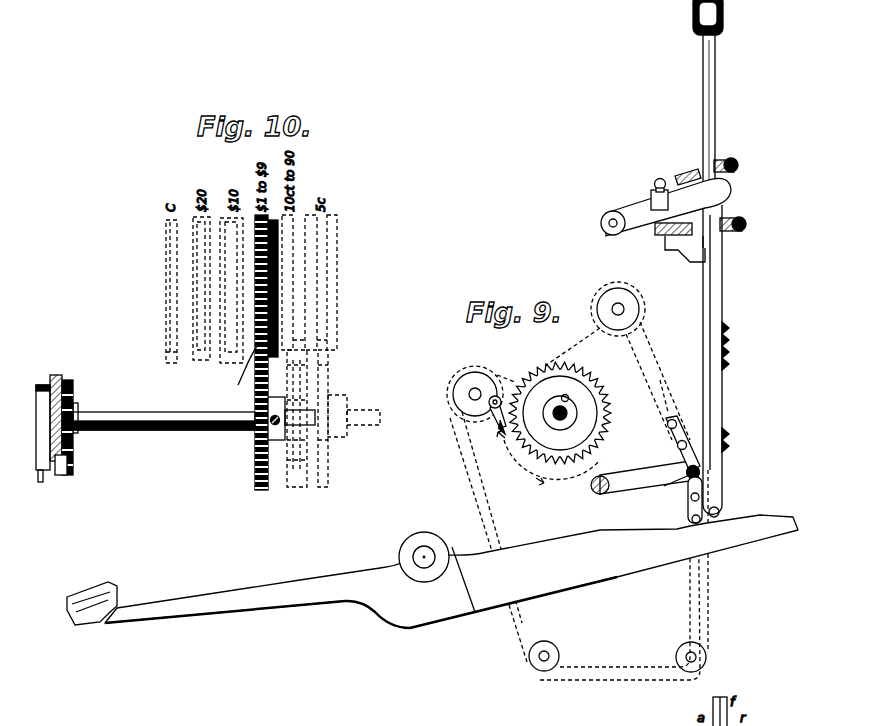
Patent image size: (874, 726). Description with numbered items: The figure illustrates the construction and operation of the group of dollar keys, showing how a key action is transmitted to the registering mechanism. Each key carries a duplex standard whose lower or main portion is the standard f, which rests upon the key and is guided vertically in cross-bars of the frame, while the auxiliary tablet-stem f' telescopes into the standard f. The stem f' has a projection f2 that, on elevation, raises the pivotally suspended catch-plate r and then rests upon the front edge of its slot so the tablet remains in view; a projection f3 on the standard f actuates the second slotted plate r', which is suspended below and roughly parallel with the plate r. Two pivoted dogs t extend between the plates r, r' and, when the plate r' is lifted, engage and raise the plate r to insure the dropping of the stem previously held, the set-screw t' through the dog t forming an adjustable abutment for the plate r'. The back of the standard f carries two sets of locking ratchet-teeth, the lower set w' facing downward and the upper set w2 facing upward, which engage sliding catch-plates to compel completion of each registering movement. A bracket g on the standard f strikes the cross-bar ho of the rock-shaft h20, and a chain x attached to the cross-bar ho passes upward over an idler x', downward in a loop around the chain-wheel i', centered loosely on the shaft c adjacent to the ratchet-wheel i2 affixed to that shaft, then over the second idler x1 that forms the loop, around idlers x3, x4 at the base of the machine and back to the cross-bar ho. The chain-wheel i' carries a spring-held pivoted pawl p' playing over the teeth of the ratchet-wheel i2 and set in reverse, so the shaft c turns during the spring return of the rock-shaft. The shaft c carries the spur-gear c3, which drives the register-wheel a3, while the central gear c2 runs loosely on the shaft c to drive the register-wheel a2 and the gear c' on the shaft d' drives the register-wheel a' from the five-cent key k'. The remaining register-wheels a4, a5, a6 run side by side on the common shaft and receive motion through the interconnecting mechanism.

In FIG. 10, the chain-wheel i' is at (49, 422).
In FIG. 10, the ratchet-wheel i2 is at (74, 422).
In FIG. 9, the ratchet-wheel i2 is at (598, 432).
In FIG. 10, the shaft c is at (194, 413).
In FIG. 9, the shaft c is at (560, 430).
In FIG. 10, the pawl p' is at (77, 468).
In FIG. 9, the pawl p' is at (468, 436).
In FIG. 10, the register-wheel a6 is at (176, 300).
In FIG. 10, the register-wheel a5 is at (202, 299).
In FIG. 10, the register-wheel a4 is at (233, 299).
In FIG. 10, the register-wheel a3 is at (245, 373).
In FIG. 10, the register-wheel a2 is at (299, 282).
In FIG. 10, the register-wheel a' is at (333, 282).
In FIG. 10, the spur-gear c3 is at (270, 362).
In FIG. 10, the spur-gear c2 is at (297, 429).
In FIG. 10, the spur-gear c' is at (327, 429).
In FIG. 10, the shaft d' is at (354, 414).
In FIG. 9, the standard f is at (712, 272).
In FIG. 9, the tablet-stem f' is at (718, 120).
In FIG. 9, the stem projection f2 is at (697, 172).
In FIG. 9, the standard projection f3 is at (685, 253).
In FIG. 9, the upper ratchet-teeth w2 is at (735, 346).
In FIG. 9, the lower ratchet-teeth w' is at (737, 447).
In FIG. 9, the lever-dog t is at (666, 207).
In FIG. 9, the set-screw t' is at (656, 188).
In FIG. 9, the catch-plate r is at (733, 166).
In FIG. 9, the second slotted plate r' is at (707, 226).
In FIG. 9, the idler x' is at (618, 309).
In FIG. 9, the pulley x1 is at (475, 394).
In FIG. 9, the idler x3 is at (544, 647).
In FIG. 9, the idler x4 is at (686, 646).
In FIG. 9, the chain x is at (588, 501).
In FIG. 9, the rock-shaft h20 is at (640, 486).
In FIG. 9, the cross-bar ho is at (680, 490).
In FIG. 9, the bracket g is at (688, 508).
In FIG. 9, the five-cent key k' is at (432, 571).